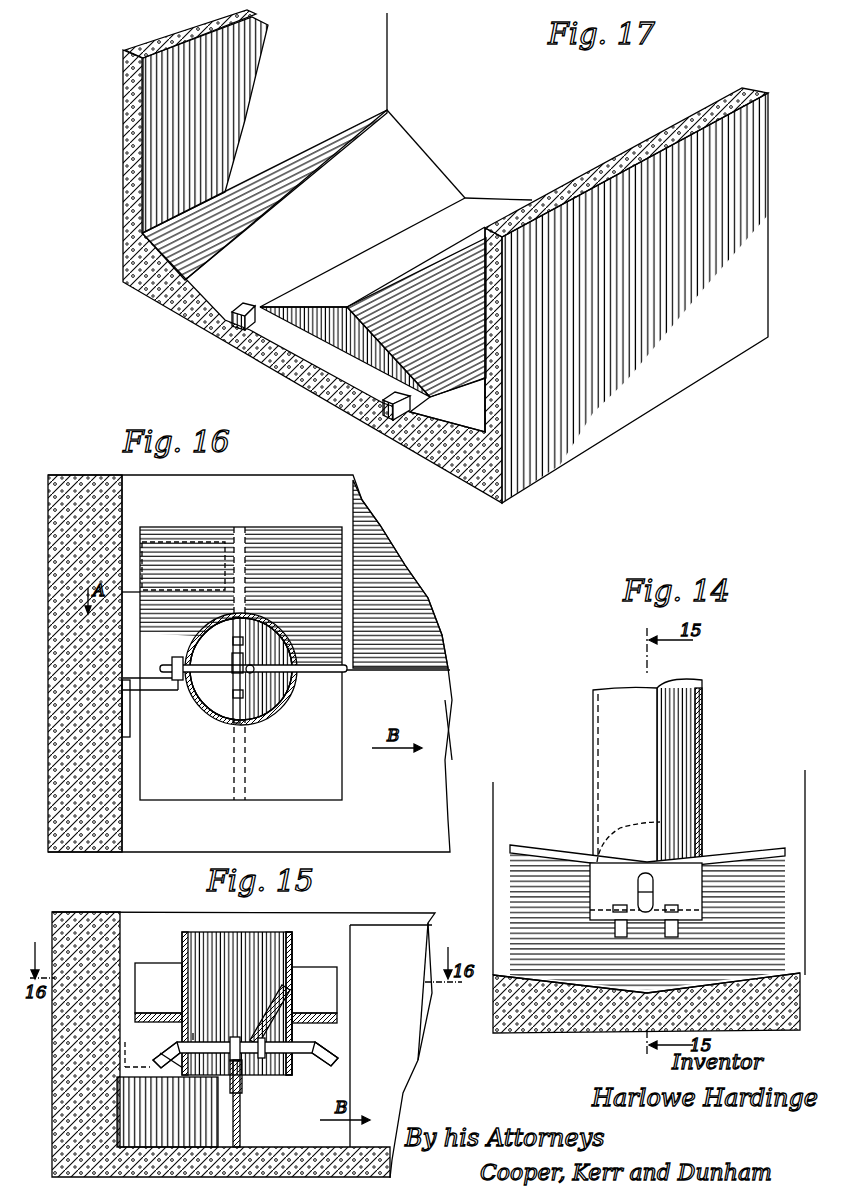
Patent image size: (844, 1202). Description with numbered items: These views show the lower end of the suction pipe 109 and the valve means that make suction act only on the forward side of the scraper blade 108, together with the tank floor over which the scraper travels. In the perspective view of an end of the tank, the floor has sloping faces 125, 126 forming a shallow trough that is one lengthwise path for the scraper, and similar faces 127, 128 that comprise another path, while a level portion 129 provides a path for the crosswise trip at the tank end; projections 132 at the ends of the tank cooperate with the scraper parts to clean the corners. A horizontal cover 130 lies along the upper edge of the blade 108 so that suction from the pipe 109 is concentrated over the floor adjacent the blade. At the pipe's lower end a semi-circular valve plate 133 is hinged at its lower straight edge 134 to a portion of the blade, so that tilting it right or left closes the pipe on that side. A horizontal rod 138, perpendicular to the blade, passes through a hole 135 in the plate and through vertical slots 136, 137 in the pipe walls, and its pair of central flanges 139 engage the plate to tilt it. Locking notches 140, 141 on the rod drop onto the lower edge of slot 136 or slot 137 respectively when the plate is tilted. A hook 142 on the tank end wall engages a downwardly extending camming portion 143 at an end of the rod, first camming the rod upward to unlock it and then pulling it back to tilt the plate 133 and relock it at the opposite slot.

In FIG. 15, the scraper blade 108 is at (241, 1130).
In FIG. 14, the scraper blade 108 is at (646, 972).
In FIG. 16, the suction pipe 109 is at (280, 707).
In FIG. 15, the suction pipe 109 is at (287, 948).
In FIG. 14, the suction pipe 109 is at (702, 734).
In FIG. 17, the face 125 is at (264, 195).
In FIG. 17, the face 126 is at (372, 252).
In FIG. 17, the face 127 is at (373, 317).
In FIG. 16, the face 127 is at (398, 564).
In FIG. 15, the face 127 is at (418, 1034).
In FIG. 17, the face 128 is at (447, 405).
In FIG. 16, the face 128 is at (440, 721).
In FIG. 14, the face 128 is at (647, 921).
In FIG. 17, the level portion 129 is at (302, 357).
In FIG. 16, the horizontal cover 130 is at (180, 790).
In FIG. 15, the horizontal cover 130 is at (150, 1012).
In FIG. 14, the horizontal cover 130 is at (700, 838).
In FIG. 17, the projection 132 is at (237, 333).
In FIG. 16, the projection 132 is at (128, 552).
In FIG. 15, the projection 132 is at (167, 1112).
In FIG. 16, the semi-circular valve plate 133 is at (283, 683).
In FIG. 15, the semi-circular valve plate 133 is at (286, 972).
In FIG. 14, the semi-circular valve plate 133 is at (662, 823).
In FIG. 15, the lower straight edge 134 is at (240, 1062).
In FIG. 14, the lower straight edge 134 is at (690, 940).
In FIG. 16, the hole 135 is at (255, 697).
In FIG. 15, the hole 135 is at (248, 1033).
In FIG. 15, the vertical slot 136 is at (194, 1033).
In FIG. 14, the vertical slot 136 is at (660, 878).
In FIG. 15, the vertical slot 137 is at (292, 1036).
In FIG. 16, the horizontal rod 138 is at (209, 665).
In FIG. 15, the horizontal rod 138 is at (236, 1038).
In FIG. 16, the central flange 139 is at (231, 678).
In FIG. 15, the central flange 139 is at (250, 1060).
In FIG. 15, the locking notch 140 is at (183, 1068).
In FIG. 15, the locking notch 141 is at (315, 1058).
In FIG. 16, the hook 142 is at (150, 673).
In FIG. 15, the hook 142 is at (140, 1068).
In FIG. 16, the camming portion 143 is at (155, 659).
In FIG. 15, the camming portion 143 is at (163, 1057).